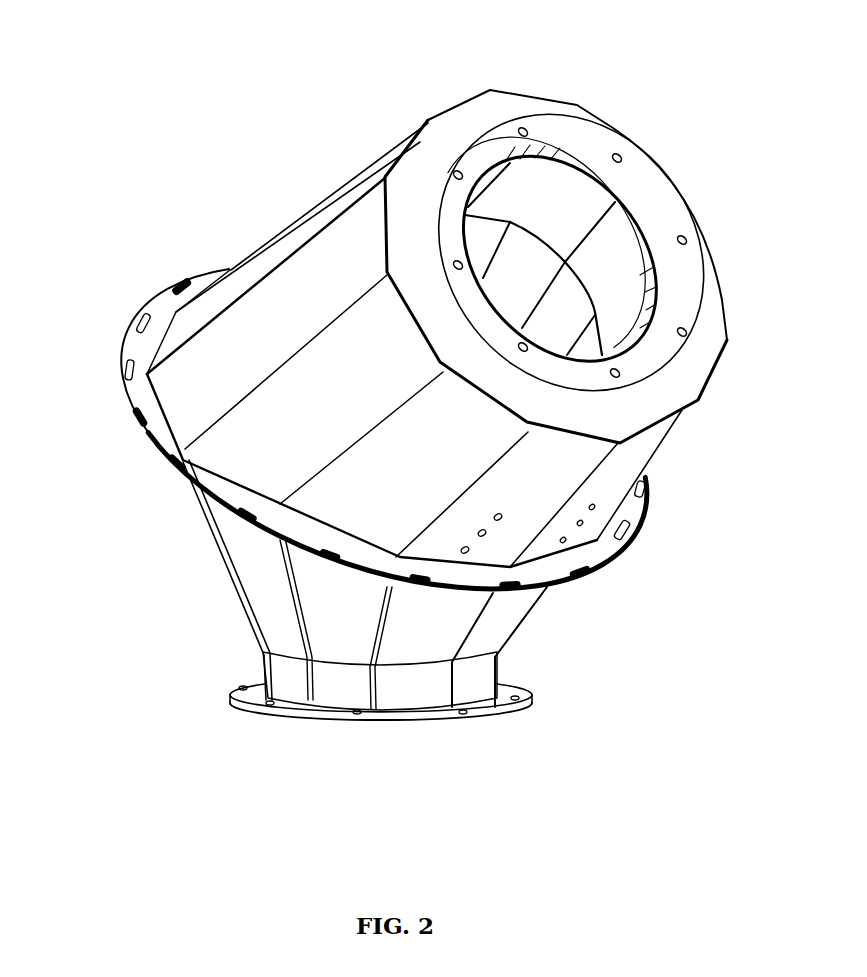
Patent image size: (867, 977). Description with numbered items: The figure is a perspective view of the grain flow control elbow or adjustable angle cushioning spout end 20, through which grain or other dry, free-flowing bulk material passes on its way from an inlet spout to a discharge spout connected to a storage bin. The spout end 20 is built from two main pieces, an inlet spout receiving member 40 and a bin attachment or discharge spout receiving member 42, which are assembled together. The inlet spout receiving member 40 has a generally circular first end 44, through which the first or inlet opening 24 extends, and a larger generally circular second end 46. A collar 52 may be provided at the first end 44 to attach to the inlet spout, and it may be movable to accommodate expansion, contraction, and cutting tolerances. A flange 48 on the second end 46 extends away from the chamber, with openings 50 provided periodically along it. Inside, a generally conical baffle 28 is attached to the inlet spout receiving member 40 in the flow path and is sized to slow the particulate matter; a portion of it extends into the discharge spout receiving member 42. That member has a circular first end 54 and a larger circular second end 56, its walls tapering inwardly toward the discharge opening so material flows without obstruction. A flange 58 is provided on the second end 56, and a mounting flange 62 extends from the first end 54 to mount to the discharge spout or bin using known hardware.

The adjustable angle cushioning spout end 20 is at (313, 108).
The first opening 24 is at (637, 254).
The baffle 28 is at (555, 322).
The inlet spout receiving member 40 is at (645, 452).
The discharge spout receiving member 42 is at (507, 617).
The first end 44 is at (520, 103).
The second end 46 is at (153, 395).
The flange 48 is at (633, 516).
The openings 50 is at (617, 557).
The collar 52 is at (637, 172).
The first end 54 is at (292, 720).
The second end 56 is at (253, 515).
The flange 58 is at (288, 552).
The mounting flange 62 is at (413, 723).